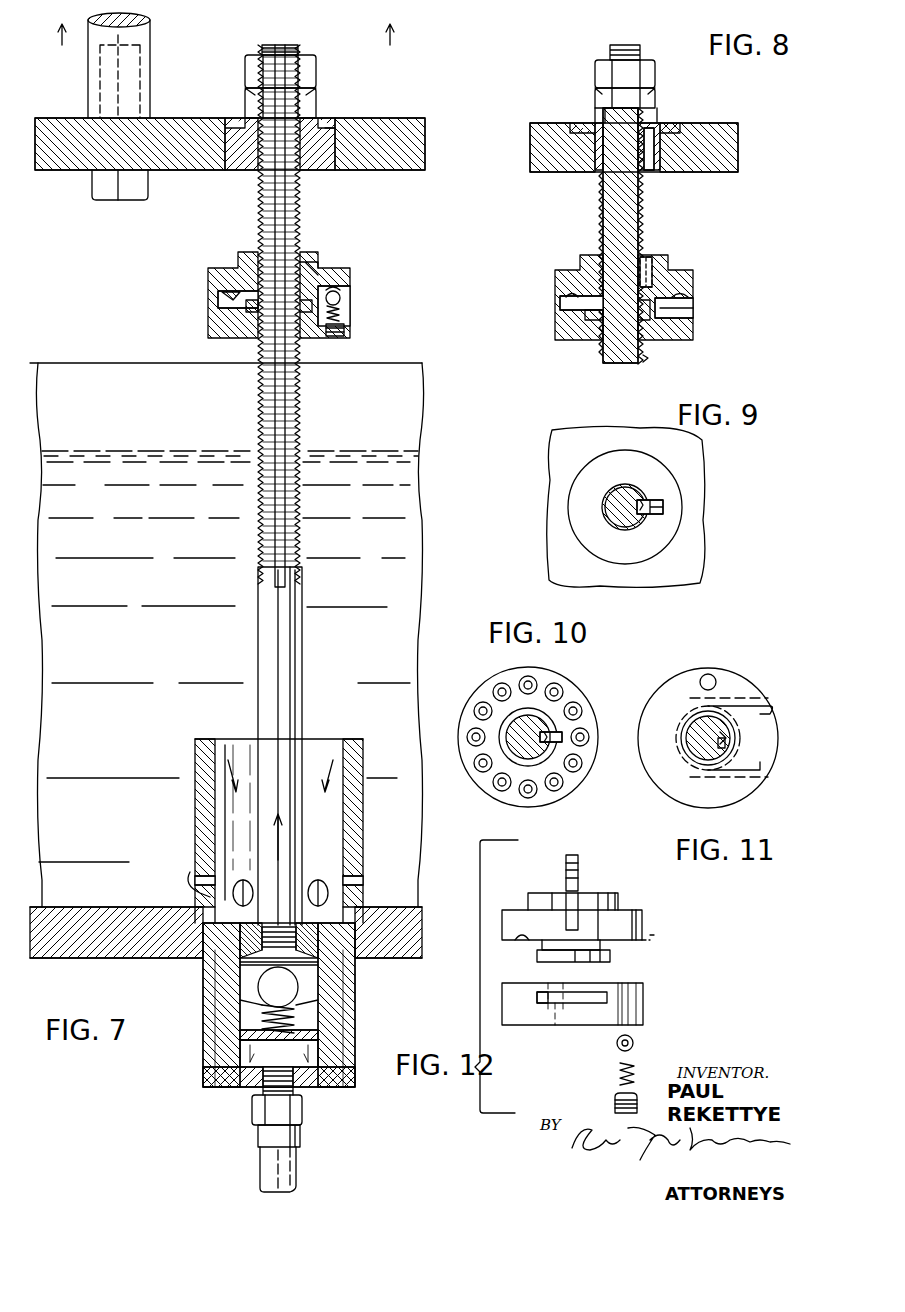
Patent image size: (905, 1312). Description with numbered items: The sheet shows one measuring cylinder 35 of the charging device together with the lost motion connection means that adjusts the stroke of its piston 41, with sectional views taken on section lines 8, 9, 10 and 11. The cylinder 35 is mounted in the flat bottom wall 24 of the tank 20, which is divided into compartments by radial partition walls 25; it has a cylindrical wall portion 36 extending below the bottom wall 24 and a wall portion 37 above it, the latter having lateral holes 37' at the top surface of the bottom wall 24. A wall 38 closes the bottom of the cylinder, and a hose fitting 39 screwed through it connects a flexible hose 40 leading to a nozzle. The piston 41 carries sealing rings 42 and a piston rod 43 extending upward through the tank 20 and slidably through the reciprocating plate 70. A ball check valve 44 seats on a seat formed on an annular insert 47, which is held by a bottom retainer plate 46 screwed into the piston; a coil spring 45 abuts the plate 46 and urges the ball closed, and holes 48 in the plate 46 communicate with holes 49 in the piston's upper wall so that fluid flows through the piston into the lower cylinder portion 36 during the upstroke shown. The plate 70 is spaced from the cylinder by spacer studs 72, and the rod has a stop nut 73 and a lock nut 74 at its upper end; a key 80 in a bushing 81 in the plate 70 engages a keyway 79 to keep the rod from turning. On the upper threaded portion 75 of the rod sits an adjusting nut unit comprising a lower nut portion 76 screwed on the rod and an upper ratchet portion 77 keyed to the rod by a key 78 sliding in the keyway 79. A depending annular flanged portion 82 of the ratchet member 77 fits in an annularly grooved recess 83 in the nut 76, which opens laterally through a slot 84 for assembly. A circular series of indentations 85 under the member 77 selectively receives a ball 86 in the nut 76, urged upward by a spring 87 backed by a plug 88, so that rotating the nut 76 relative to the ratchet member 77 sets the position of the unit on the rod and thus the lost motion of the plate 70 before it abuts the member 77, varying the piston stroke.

In FIG. 7, the section line 8— 8 is at (280, 28).
In FIG. 8, the section line 9— 9 is at (554, 110).
In FIG. 8, the section line 10— 10 is at (533, 322).
In FIG. 8, the section line 11— 11 is at (628, 330).
In FIG. 7, the tank 20 is at (426, 546).
In FIG. 7, the bottom wall 24 is at (68, 950).
In FIG. 7, the partition wall 25 is at (410, 418).
In FIG. 7, the measuring cylinder 35 is at (185, 819).
In FIG. 7, the cylindrical wall portion 36 is at (348, 1002).
In FIG. 7, the wall portion 37 is at (372, 831).
In FIG. 7, the lateral holes 37' is at (264, 868).
In FIG. 7, the wall 38 is at (232, 1085).
In FIG. 7, the hose fitting 39 is at (302, 1115).
In FIG. 7, the flexible hose 40 is at (296, 1170).
In FIG. 7, the piston 41 is at (340, 978).
In FIG. 7, the sealing rings 42 is at (230, 958).
In FIG. 7, the piston rod 43 is at (297, 715).
In FIG. 8, the piston rod 43 is at (615, 197).
In FIG. 9, the piston rod 43 is at (612, 500).
In FIG. 10, the piston rod 43 is at (512, 725).
In FIG. 11, the piston rod 43 is at (725, 752).
In FIG. 7, the ball check valve 44 is at (260, 982).
In FIG. 7, the coil spring 45 is at (279, 1053).
In FIG. 7, the bottom retainer plate 46 is at (210, 1072).
In FIG. 7, the annular insert 47 is at (315, 1030).
In FIG. 7, the holes 48 is at (235, 1035).
In FIG. 7, the holes 49 is at (248, 940).
In FIG. 7, the reciprocating head or plate 70 is at (412, 152).
In FIG. 8, the reciprocating head or plate 70 is at (740, 153).
In FIG. 9, the reciprocating head or plate 70 is at (683, 572).
In FIG. 7, the spacer stud 72 is at (143, 37).
In FIG. 7, the stop nut 73 is at (250, 102).
In FIG. 8, the stop nut 73 is at (652, 98).
In FIG. 7, the lock nut 74 is at (258, 68).
In FIG. 8, the lock nut 74 is at (648, 65).
In FIG. 7, the upper threaded portion 75 is at (302, 232).
In FIG. 8, the upper threaded portion 75 is at (603, 213).
In FIG. 9, the upper threaded portion 75 is at (628, 525).
In FIG. 10, the upper threaded portion 75 is at (512, 755).
In FIG. 11, the upper threaded portion 75 is at (700, 740).
In FIG. 7, the lower nut portion 76 is at (210, 332).
In FIG. 8, the lower nut portion 76 is at (576, 338).
In FIG. 11, the lower nut portion 76 is at (740, 675).
In FIG. 12, the lower nut portion 76 is at (643, 1005).
In FIG. 7, the upper ratchet portion 77 is at (222, 268).
In FIG. 8, the upper ratchet portion 77 is at (593, 258).
In FIG. 10, the upper ratchet portion 77 is at (572, 695).
In FIG. 12, the upper ratchet portion 77 is at (642, 915).
In FIG. 8, the key 78 is at (655, 258).
In FIG. 10, the key 78 is at (560, 733).
In FIG. 12, the key 78 is at (580, 880).
In FIG. 7, the keyway 79 is at (275, 182).
In FIG. 8, the keyway 79 is at (650, 198).
In FIG. 9, the keyway 79 is at (645, 500).
In FIG. 10, the keyway 79 is at (548, 740).
In FIG. 11, the keyway 79 is at (700, 762).
In FIG. 8, the key 80 is at (660, 123).
In FIG. 9, the key 80 is at (665, 504).
In FIG. 7, the bushing 81 is at (320, 118).
In FIG. 8, the bushing 81 is at (582, 120).
In FIG. 9, the bushing 81 is at (668, 525).
In FIG. 7, the depending annular flanged portion 82 is at (246, 306).
In FIG. 8, the depending annular flanged portion 82 is at (593, 320).
In FIG. 10, the depending annular flanged portion 82 is at (505, 715).
In FIG. 11, the depending annular flanged portion 82 is at (740, 742).
In FIG. 12, the depending annular flanged portion 82 is at (612, 957).
In FIG. 7, the annularly grooved recess 83 is at (322, 263).
In FIG. 11, the annularly grooved recess 83 is at (715, 762).
In FIG. 12, the annularly grooved recess 83 is at (545, 1005).
In FIG. 8, the slot 84 is at (662, 330).
In FIG. 11, the slot 84 is at (762, 712).
In FIG. 12, the slot 84 is at (578, 1003).
In FIG. 7, the indentations 85 is at (338, 290).
In FIG. 8, the indentations 85 is at (680, 292).
In FIG. 10, the indentations 85 is at (553, 690).
In FIG. 12, the indentations 85 is at (655, 932).
In FIG. 7, the ball 86 is at (342, 296).
In FIG. 11, the ball 86 is at (708, 674).
In FIG. 12, the ball 86 is at (633, 1042).
In FIG. 7, the spring 87 is at (345, 313).
In FIG. 12, the spring 87 is at (618, 1074).
In FIG. 7, the plug 88 is at (335, 340).
In FIG. 12, the plug 88 is at (613, 1098).